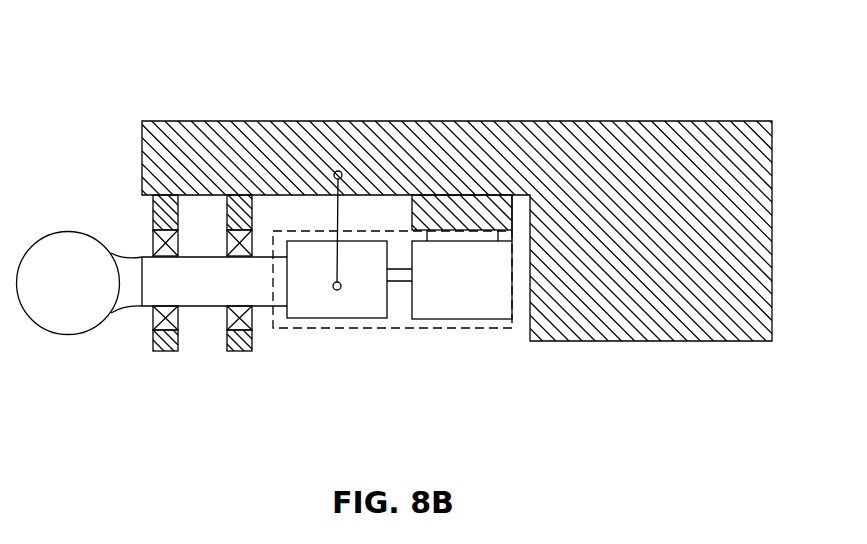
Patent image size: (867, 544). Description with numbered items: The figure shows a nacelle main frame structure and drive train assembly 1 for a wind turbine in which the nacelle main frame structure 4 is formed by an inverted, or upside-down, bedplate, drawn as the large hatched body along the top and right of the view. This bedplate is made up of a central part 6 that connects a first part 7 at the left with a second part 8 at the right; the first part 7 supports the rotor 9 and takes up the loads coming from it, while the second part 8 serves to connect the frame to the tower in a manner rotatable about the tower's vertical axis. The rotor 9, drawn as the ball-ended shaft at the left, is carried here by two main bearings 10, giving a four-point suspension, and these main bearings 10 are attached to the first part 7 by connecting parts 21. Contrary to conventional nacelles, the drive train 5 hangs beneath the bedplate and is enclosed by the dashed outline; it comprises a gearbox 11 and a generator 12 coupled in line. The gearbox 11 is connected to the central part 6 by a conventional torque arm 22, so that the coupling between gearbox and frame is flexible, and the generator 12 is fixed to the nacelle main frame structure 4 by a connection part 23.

The nacelle main frame structure and drive train assembly 1 is at (619, 64).
The nacelle main frame structure 4 is at (673, 150).
The drive train 5 is at (388, 314).
The central part 6 is at (351, 158).
The first part 7 is at (176, 175).
The second part 8 is at (715, 254).
The rotor 9 is at (80, 318).
The main bearing 10 is at (157, 248).
The gearbox 11 is at (333, 305).
The generator 12 is at (462, 290).
The connecting parts 21 is at (157, 212).
The torque arm 22 is at (335, 220).
The connection part 23 is at (477, 202).